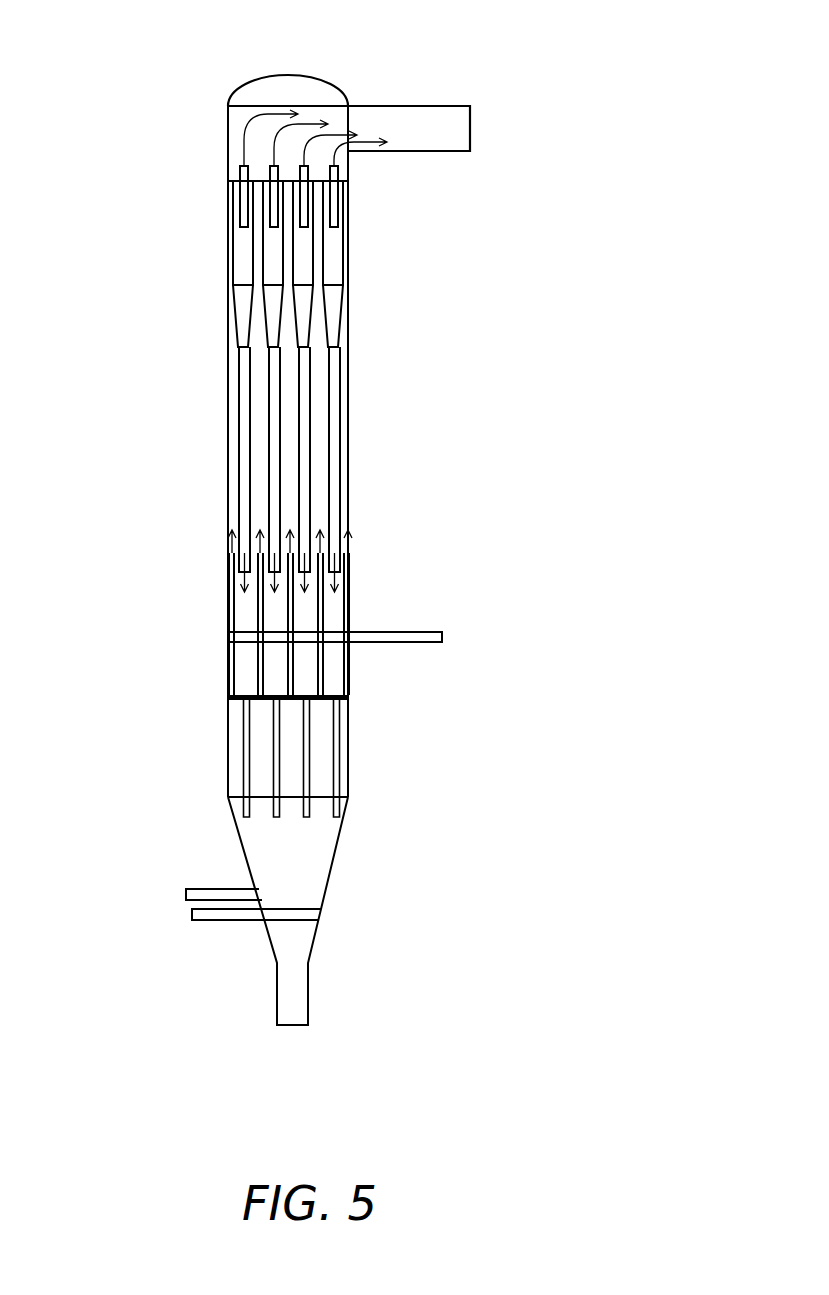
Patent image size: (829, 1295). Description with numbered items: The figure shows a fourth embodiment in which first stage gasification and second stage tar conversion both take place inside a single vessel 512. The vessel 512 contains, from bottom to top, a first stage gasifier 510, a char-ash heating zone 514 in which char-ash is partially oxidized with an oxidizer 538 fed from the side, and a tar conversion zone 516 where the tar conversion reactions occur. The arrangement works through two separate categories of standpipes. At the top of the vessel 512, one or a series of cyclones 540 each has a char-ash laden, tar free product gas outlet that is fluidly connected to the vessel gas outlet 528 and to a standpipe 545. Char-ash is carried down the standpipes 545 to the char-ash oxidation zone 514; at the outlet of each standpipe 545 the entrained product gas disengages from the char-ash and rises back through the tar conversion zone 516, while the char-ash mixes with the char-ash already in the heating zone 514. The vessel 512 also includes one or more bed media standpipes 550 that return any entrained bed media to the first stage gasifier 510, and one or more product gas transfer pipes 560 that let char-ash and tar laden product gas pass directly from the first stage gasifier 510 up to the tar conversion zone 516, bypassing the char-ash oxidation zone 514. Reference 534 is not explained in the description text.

The first stage gasifier 510 is at (238, 770).
The single vessel 512 is at (192, 503).
The char-ash heating zone 514 is at (249, 673).
The tar conversion zone 516 is at (236, 430).
The vessel gas outlet 528 is at (342, 116).
The feed tubes 534 is at (262, 754).
The oxidizer 538 is at (442, 636).
The cyclones 540 is at (232, 200).
The standpipes 545 is at (237, 367).
The bed media standpipes 550 is at (340, 783).
The product gas transfer pipes 560 is at (328, 633).